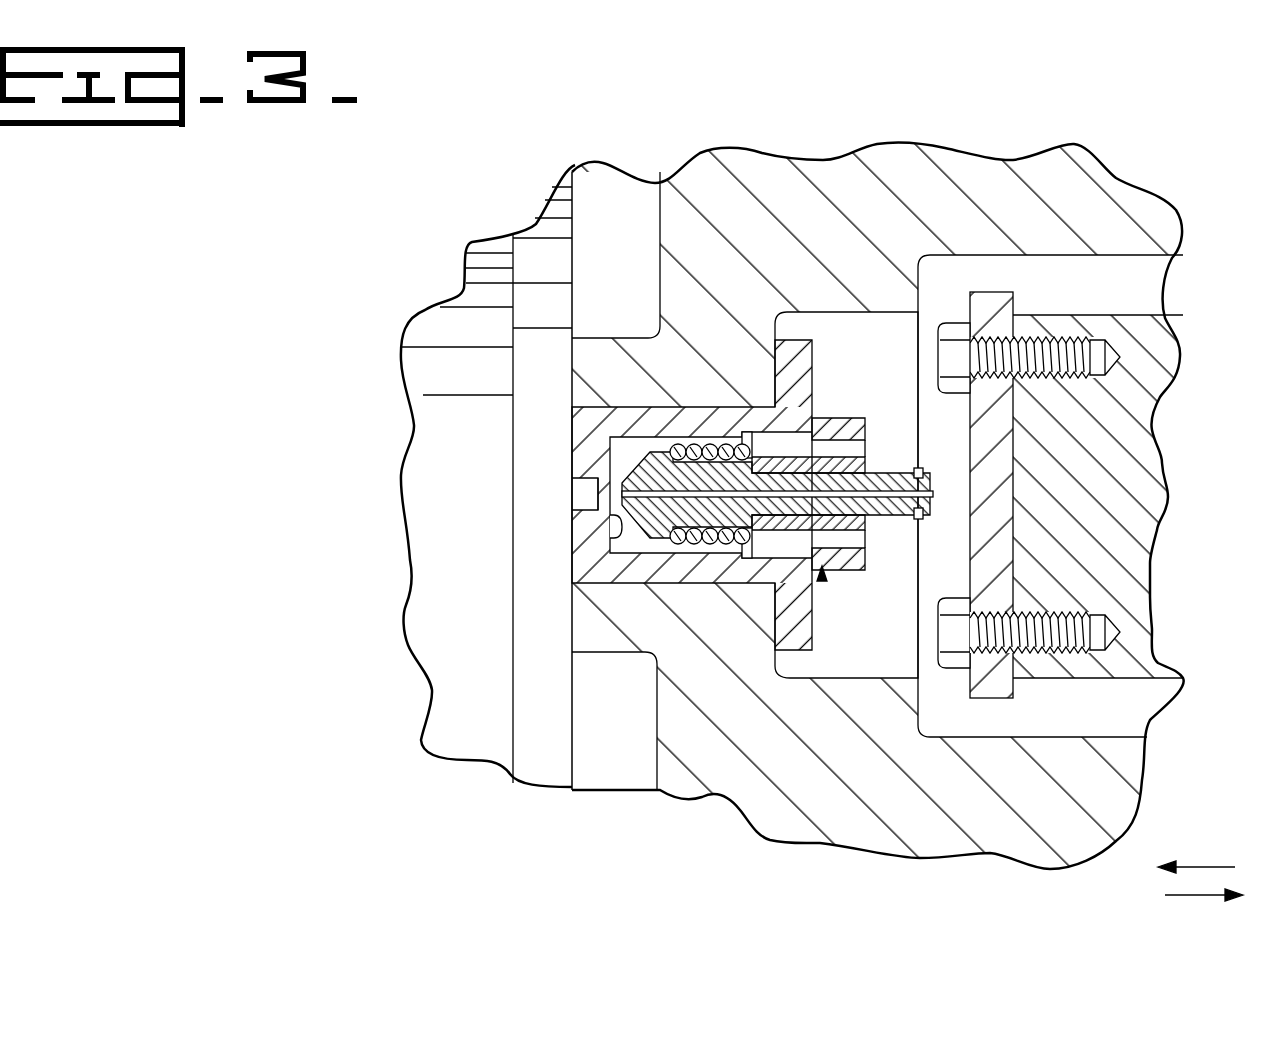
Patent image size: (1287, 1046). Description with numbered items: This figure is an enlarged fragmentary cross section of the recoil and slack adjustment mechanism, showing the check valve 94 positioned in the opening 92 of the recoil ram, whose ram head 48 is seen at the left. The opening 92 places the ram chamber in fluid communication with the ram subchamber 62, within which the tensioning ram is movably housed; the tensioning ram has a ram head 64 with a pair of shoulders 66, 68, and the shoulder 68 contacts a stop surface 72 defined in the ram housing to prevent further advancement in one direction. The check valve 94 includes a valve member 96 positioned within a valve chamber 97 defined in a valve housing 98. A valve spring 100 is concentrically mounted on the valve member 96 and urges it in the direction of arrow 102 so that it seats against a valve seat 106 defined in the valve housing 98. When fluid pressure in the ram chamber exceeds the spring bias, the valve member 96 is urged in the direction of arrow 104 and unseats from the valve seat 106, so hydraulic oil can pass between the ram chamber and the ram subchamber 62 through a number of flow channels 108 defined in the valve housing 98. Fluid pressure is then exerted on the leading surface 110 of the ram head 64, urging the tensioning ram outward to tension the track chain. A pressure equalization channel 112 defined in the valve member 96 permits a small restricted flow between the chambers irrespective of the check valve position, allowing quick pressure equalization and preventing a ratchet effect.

The ram head 48 is at (542, 240).
The ram subchamber 62 is at (1092, 737).
The ram head 64 is at (990, 316).
The shoulder 66 is at (1013, 297).
The shoulder 68 is at (968, 315).
The stop surface 72 is at (920, 710).
The opening 92 is at (598, 582).
The check valve 94 is at (822, 581).
The valve member 96 is at (872, 478).
The valve chamber 97 is at (722, 470).
The valve housing 98 is at (837, 428).
The valve spring 100 is at (692, 548).
The arrow 102 is at (1210, 865).
The arrow 104 is at (1203, 897).
The valve seat 106 is at (571, 548).
The flow channels 108 is at (830, 540).
The leading surface 110 is at (967, 408).
The pressure equalization channel 112 is at (935, 510).